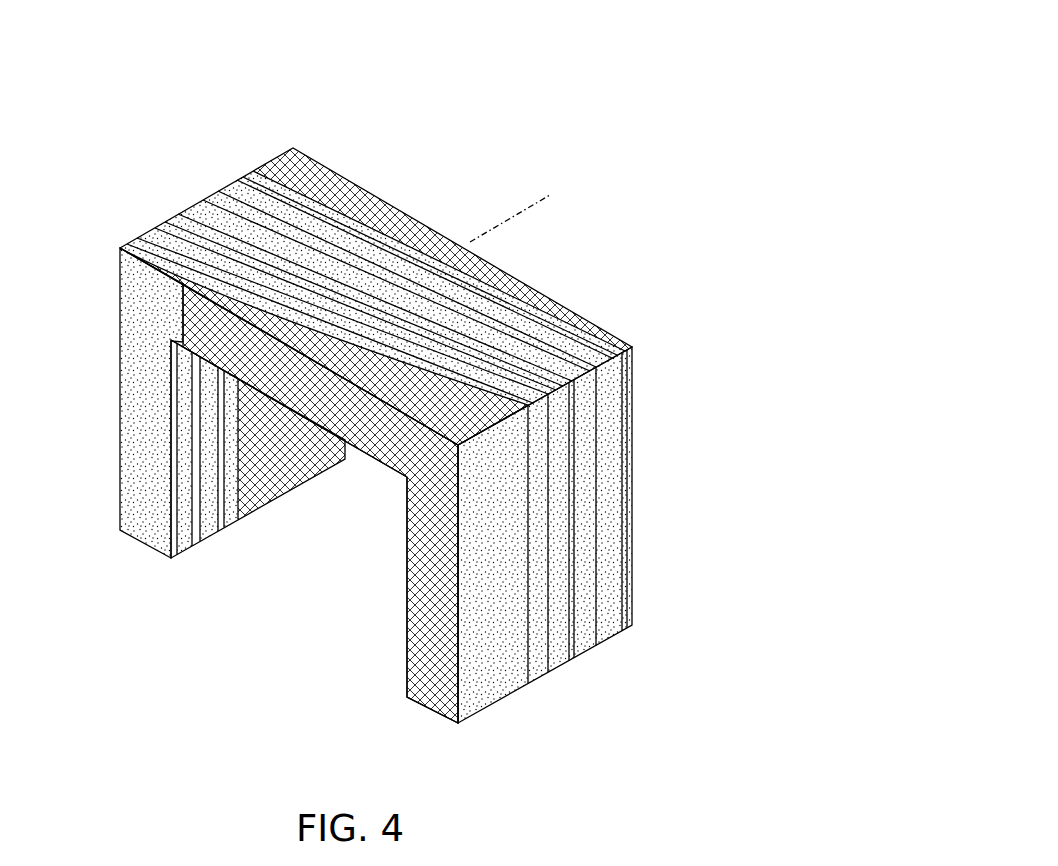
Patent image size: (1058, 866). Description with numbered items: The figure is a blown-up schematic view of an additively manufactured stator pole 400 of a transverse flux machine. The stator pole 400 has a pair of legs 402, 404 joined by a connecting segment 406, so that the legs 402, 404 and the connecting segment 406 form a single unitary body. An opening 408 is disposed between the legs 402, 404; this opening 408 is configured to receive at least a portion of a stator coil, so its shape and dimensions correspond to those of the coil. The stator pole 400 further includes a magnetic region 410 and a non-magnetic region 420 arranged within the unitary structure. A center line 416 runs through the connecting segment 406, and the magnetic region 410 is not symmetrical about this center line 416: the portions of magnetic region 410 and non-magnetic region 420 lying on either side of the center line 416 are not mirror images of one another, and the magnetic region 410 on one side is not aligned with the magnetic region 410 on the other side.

The stator pole 400 is at (436, 370).
The leg 402 is at (199, 403).
The leg 404 is at (405, 630).
The connecting segment 406 is at (146, 301).
The opening 408 is at (264, 590).
The magnetic region 410 is at (604, 307).
The center line 416 is at (512, 218).
The non-magnetic region 420 is at (329, 168).